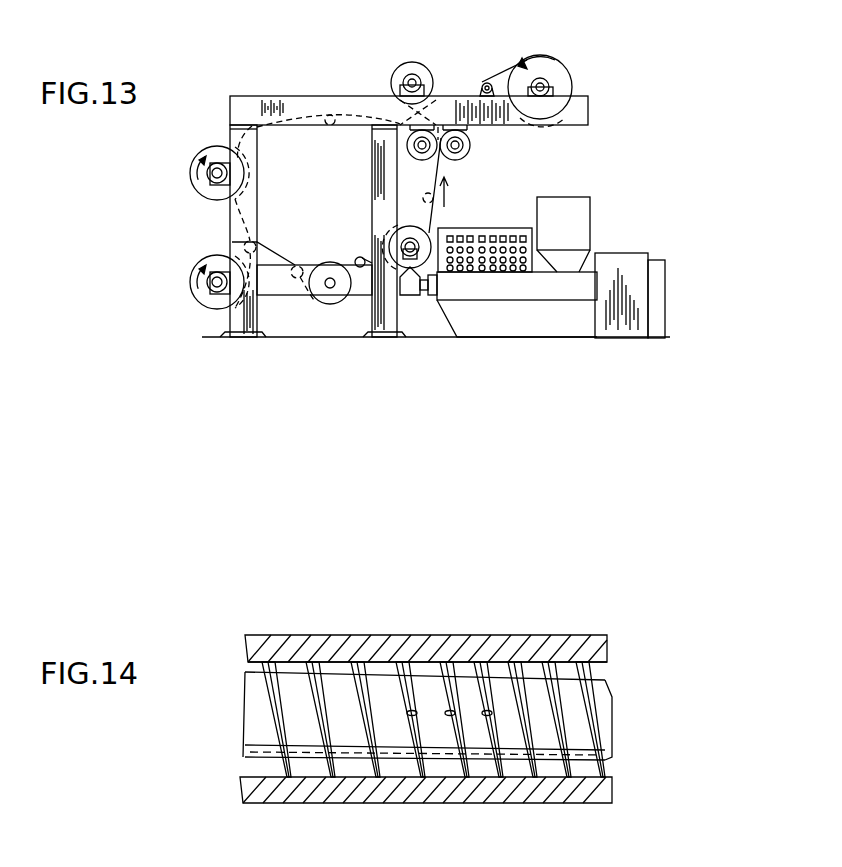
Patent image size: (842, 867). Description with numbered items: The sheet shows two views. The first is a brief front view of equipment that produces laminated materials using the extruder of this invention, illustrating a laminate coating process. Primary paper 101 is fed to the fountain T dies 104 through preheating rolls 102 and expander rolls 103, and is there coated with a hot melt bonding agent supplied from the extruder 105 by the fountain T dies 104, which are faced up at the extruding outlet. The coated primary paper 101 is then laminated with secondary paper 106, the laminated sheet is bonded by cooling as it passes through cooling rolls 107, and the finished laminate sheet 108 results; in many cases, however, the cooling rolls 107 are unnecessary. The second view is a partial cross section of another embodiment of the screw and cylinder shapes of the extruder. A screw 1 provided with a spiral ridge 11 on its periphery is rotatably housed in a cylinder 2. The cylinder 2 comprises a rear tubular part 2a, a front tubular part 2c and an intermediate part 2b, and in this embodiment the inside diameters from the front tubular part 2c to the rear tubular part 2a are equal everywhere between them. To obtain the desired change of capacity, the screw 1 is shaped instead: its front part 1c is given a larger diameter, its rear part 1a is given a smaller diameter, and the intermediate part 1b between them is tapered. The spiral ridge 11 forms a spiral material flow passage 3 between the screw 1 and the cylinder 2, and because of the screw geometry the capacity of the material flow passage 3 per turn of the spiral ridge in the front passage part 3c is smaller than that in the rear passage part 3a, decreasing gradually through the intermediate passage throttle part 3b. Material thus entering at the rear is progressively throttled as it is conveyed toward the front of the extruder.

In FIG. 13, the primary paper 101 is at (279, 258).
In FIG. 13, the preheating rolls 102 is at (330, 302).
In FIG. 13, the expander rolls 103 is at (360, 268).
In FIG. 13, the fountain T dies 104 is at (411, 297).
In FIG. 13, the extruder 105 is at (535, 300).
In FIG. 13, the secondary paper 106 is at (510, 70).
In FIG. 13, the cooling rolls 107 is at (419, 72).
In FIG. 13, the laminate sheet 108 is at (317, 117).
In FIG. 14, the screw 1 is at (247, 703).
In FIG. 14, the rear part 1a is at (577, 743).
In FIG. 14, the intermediate part 1b is at (410, 755).
In FIG. 14, the front part 1c is at (268, 757).
In FIG. 14, the cylinder 2 is at (245, 783).
In FIG. 14, the rear tubular part 2a is at (595, 800).
In FIG. 14, the intermediate part 2b is at (463, 797).
In FIG. 14, the front tubular part 2c is at (297, 793).
In FIG. 14, the material flow passage 3 is at (600, 685).
In FIG. 14, the rear passage part 3a is at (562, 675).
In FIG. 14, the intermediate passage throttle part 3b is at (427, 670).
In FIG. 14, the front passage part 3c is at (337, 667).
In FIG. 14, the spiral ridge 11 is at (583, 677).